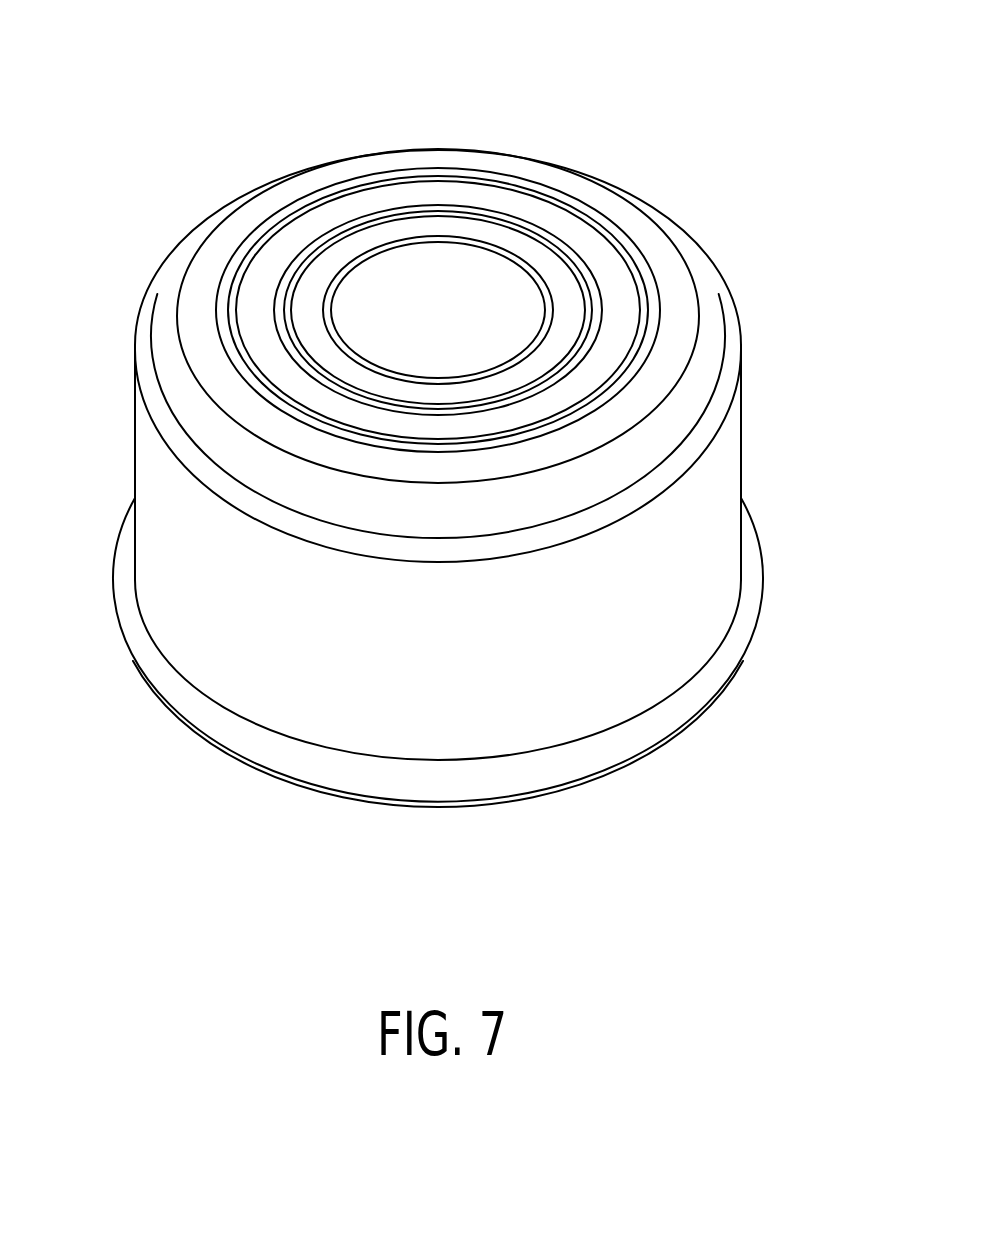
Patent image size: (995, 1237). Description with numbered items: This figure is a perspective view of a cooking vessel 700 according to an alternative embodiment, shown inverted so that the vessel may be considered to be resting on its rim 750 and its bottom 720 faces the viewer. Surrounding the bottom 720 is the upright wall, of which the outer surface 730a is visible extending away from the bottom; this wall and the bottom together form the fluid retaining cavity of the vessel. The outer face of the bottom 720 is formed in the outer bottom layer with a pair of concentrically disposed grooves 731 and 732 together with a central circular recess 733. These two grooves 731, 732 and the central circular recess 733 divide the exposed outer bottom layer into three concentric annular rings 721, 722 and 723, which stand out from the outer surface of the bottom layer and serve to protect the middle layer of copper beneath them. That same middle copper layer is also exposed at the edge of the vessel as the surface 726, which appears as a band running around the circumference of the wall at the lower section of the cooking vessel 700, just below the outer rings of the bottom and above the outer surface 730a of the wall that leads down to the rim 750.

The cooking vessel 700 is at (704, 100).
The bottom 720 is at (281, 145).
The annular ring 721 is at (677, 278).
The annular ring 722 is at (613, 273).
The annular ring 723 is at (528, 248).
The surface 726 is at (710, 307).
The outer surface 730a is at (741, 463).
The groove 731 is at (223, 311).
The groove 732 is at (300, 258).
The central circular recess 733 is at (438, 315).
The rim 750 is at (716, 694).